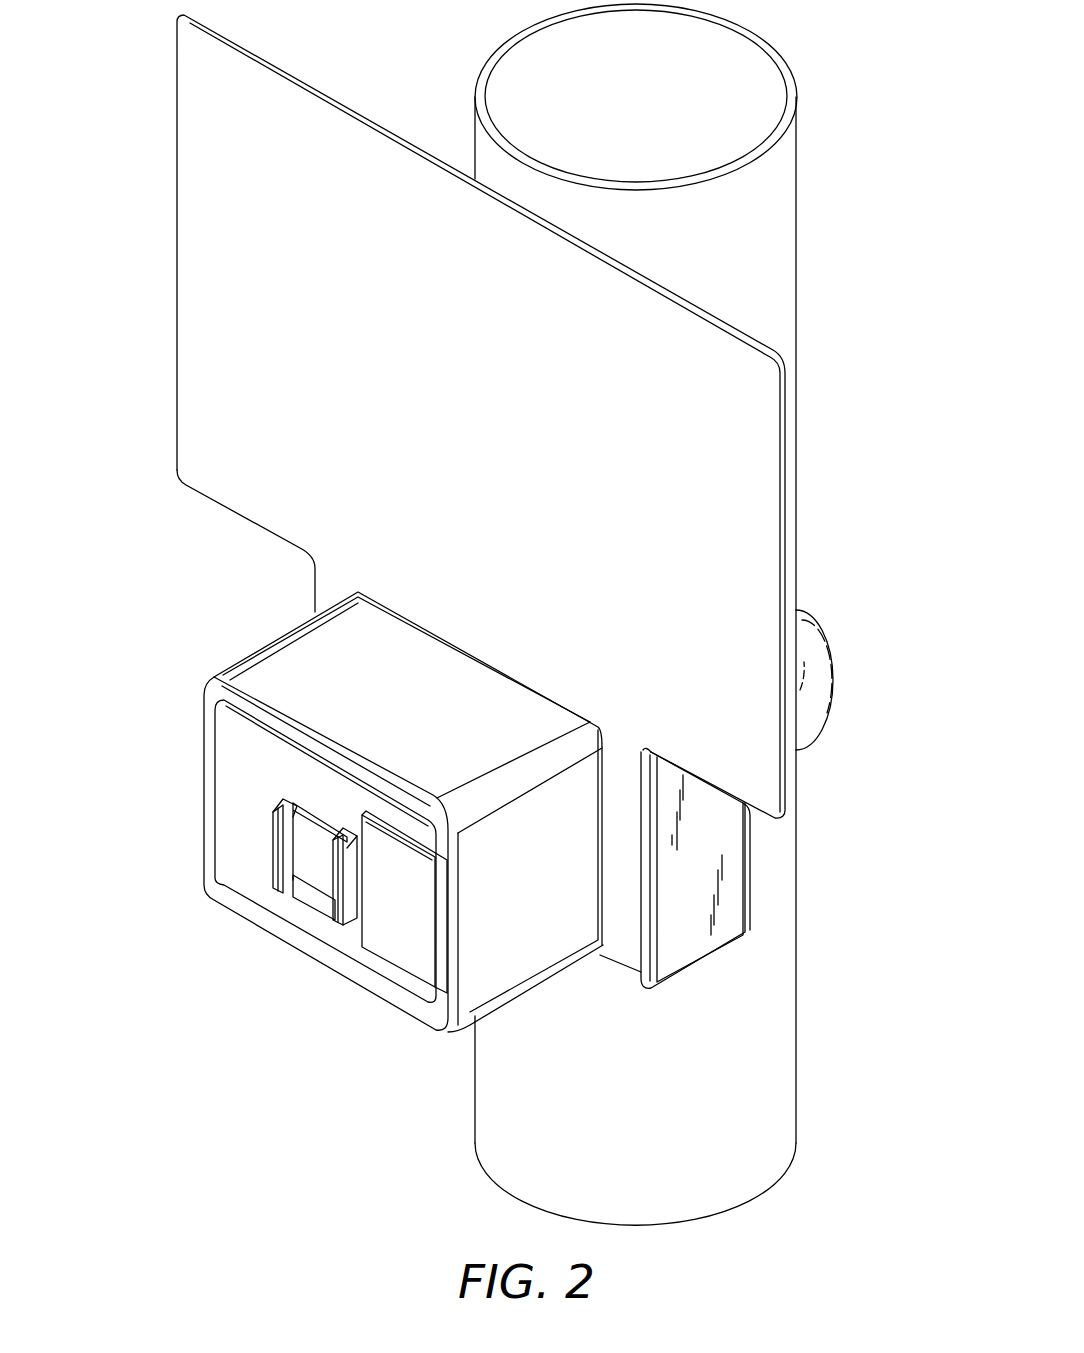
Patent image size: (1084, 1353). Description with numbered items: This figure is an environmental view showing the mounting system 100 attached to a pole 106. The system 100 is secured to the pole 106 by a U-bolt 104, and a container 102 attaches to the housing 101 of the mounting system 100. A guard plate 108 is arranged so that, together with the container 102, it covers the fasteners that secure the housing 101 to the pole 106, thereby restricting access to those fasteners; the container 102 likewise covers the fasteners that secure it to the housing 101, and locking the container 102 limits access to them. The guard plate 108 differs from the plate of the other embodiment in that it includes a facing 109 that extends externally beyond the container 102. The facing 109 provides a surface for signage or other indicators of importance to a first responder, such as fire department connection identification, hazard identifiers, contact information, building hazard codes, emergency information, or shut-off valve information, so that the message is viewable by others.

The mounting system 100 is at (727, 857).
The housing 101 is at (693, 925).
The container 102 is at (287, 947).
The U-bolt 104 is at (823, 643).
The pole 106 is at (796, 222).
The guard plate 108 is at (242, 485).
The facing 109 is at (202, 243).